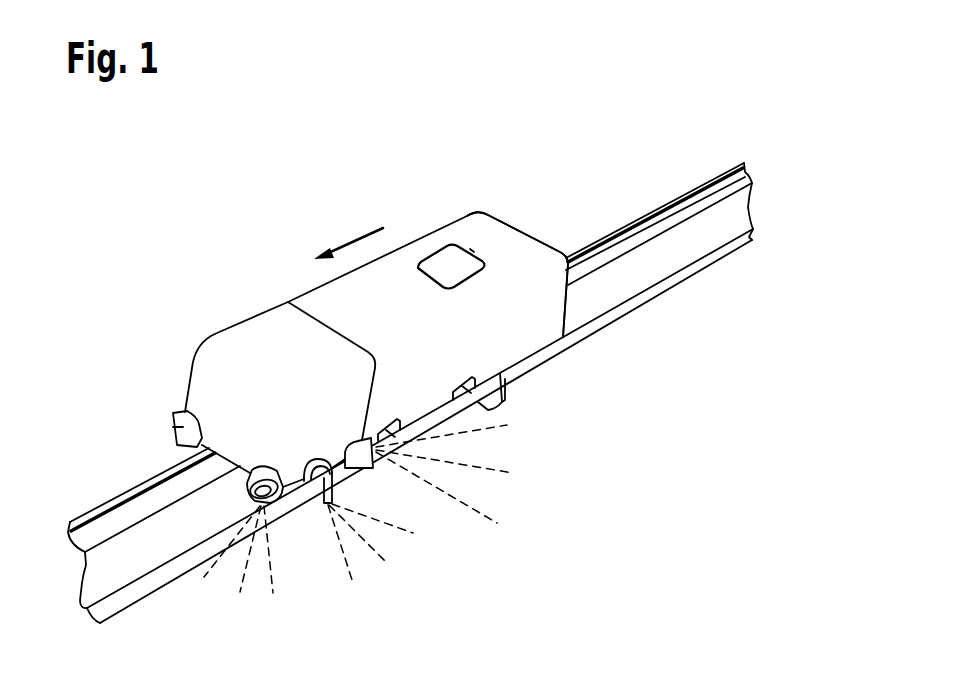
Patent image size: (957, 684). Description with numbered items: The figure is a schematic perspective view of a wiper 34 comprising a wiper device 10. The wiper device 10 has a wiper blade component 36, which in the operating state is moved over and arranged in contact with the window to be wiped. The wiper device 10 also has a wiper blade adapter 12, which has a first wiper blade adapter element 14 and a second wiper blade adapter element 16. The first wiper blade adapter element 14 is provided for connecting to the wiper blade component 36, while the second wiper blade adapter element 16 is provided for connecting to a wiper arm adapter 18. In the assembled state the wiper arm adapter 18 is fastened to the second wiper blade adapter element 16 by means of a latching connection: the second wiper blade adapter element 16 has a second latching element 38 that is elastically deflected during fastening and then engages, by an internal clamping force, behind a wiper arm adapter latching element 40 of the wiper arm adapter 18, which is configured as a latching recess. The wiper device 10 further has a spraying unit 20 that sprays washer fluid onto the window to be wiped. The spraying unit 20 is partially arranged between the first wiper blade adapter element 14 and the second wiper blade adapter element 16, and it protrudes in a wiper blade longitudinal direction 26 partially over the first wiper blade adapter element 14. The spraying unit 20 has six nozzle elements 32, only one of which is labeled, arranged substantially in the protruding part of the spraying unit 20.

The wiper device 10 is at (670, 162).
The wiper blade adapter 12 is at (196, 325).
The first wiper blade adapter element 14 is at (477, 402).
The second wiper blade adapter element 16 is at (255, 343).
The wiper arm adapter 18 is at (535, 257).
The spraying unit 20 is at (307, 513).
The wiper blade longitudinal direction 26 is at (355, 235).
The nozzle element 32 is at (172, 420).
The wiper 34 is at (682, 100).
The wiper blade component 36 is at (681, 288).
The second latching element 38 is at (447, 265).
The wiper arm adapter latching element 40 is at (472, 251).